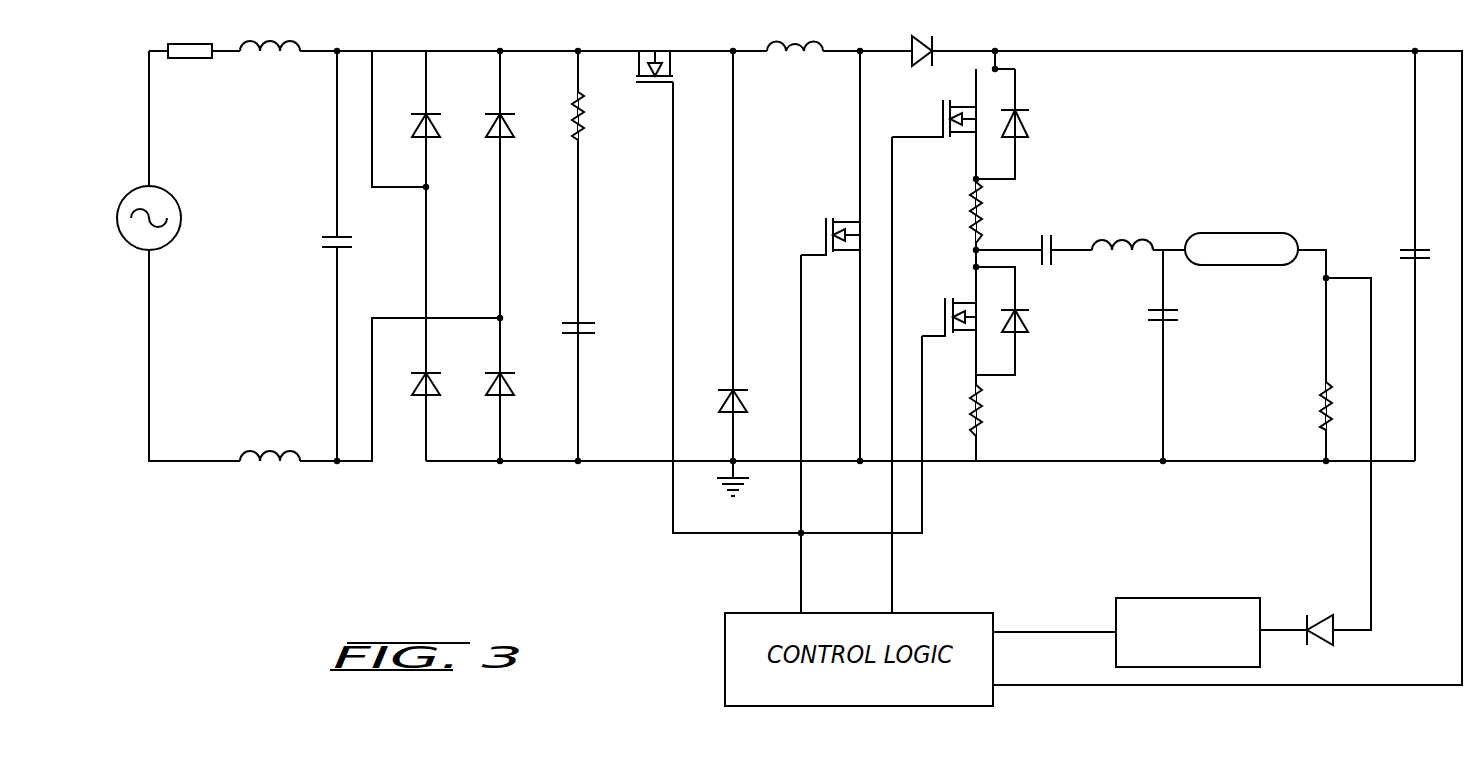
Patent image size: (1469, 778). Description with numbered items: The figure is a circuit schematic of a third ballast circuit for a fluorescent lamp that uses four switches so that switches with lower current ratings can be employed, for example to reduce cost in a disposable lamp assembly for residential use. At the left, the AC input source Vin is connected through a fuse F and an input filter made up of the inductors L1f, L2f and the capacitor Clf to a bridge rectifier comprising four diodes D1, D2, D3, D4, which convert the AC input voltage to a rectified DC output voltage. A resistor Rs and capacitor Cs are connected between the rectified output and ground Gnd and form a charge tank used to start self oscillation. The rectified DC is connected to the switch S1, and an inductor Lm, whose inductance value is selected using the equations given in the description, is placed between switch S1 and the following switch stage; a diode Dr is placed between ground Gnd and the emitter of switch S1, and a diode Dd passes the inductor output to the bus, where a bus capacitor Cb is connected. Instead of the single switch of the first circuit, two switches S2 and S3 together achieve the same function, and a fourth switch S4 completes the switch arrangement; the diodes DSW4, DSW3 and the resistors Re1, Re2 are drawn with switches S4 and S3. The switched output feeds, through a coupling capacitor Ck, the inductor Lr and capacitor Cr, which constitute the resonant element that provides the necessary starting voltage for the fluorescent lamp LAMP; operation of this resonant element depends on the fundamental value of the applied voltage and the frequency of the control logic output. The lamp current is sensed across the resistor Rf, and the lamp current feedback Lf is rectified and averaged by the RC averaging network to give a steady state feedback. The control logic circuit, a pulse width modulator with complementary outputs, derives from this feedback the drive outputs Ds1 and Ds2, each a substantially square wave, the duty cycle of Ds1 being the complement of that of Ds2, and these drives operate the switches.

The fuse F is at (190, 36).
The input filter inductor L1f is at (272, 32).
The input filter inductor L2f is at (274, 443).
The input filter capacitor Clf is at (351, 229).
The AC input voltage source Vin is at (201, 235).
The diode D1 is at (439, 111).
The diode D2 is at (514, 111).
The diode D3 is at (439, 369).
The diode D4 is at (514, 369).
The resistor Rs is at (596, 116).
The capacitor Cs is at (596, 342).
The switch S1 is at (673, 67).
The inductor Lm is at (800, 32).
The boost diode Dd is at (932, 37).
The diode Dr is at (744, 386).
The ground Gnd is at (754, 493).
The switch S2 is at (827, 226).
The switch S3 is at (949, 304).
The switch S4 is at (934, 107).
The switch diode DSW3 is at (1053, 308).
The switch diode DSW4 is at (1053, 112).
The resistor Re1 is at (1002, 212).
The resistor Re2 is at (1002, 410).
The coupling capacitor Ck is at (1063, 242).
The inductor Lr is at (1122, 232).
The fluorescent lamp LAMP is at (1241, 249).
The capacitor Cr is at (1176, 327).
The bus capacitor Cb is at (1426, 240).
The feedback resistor Rf is at (1342, 403).
The lamp current feedback Lf is at (1204, 632).
The drive output Ds1 is at (771, 573).
The drive output Ds2 is at (931, 573).